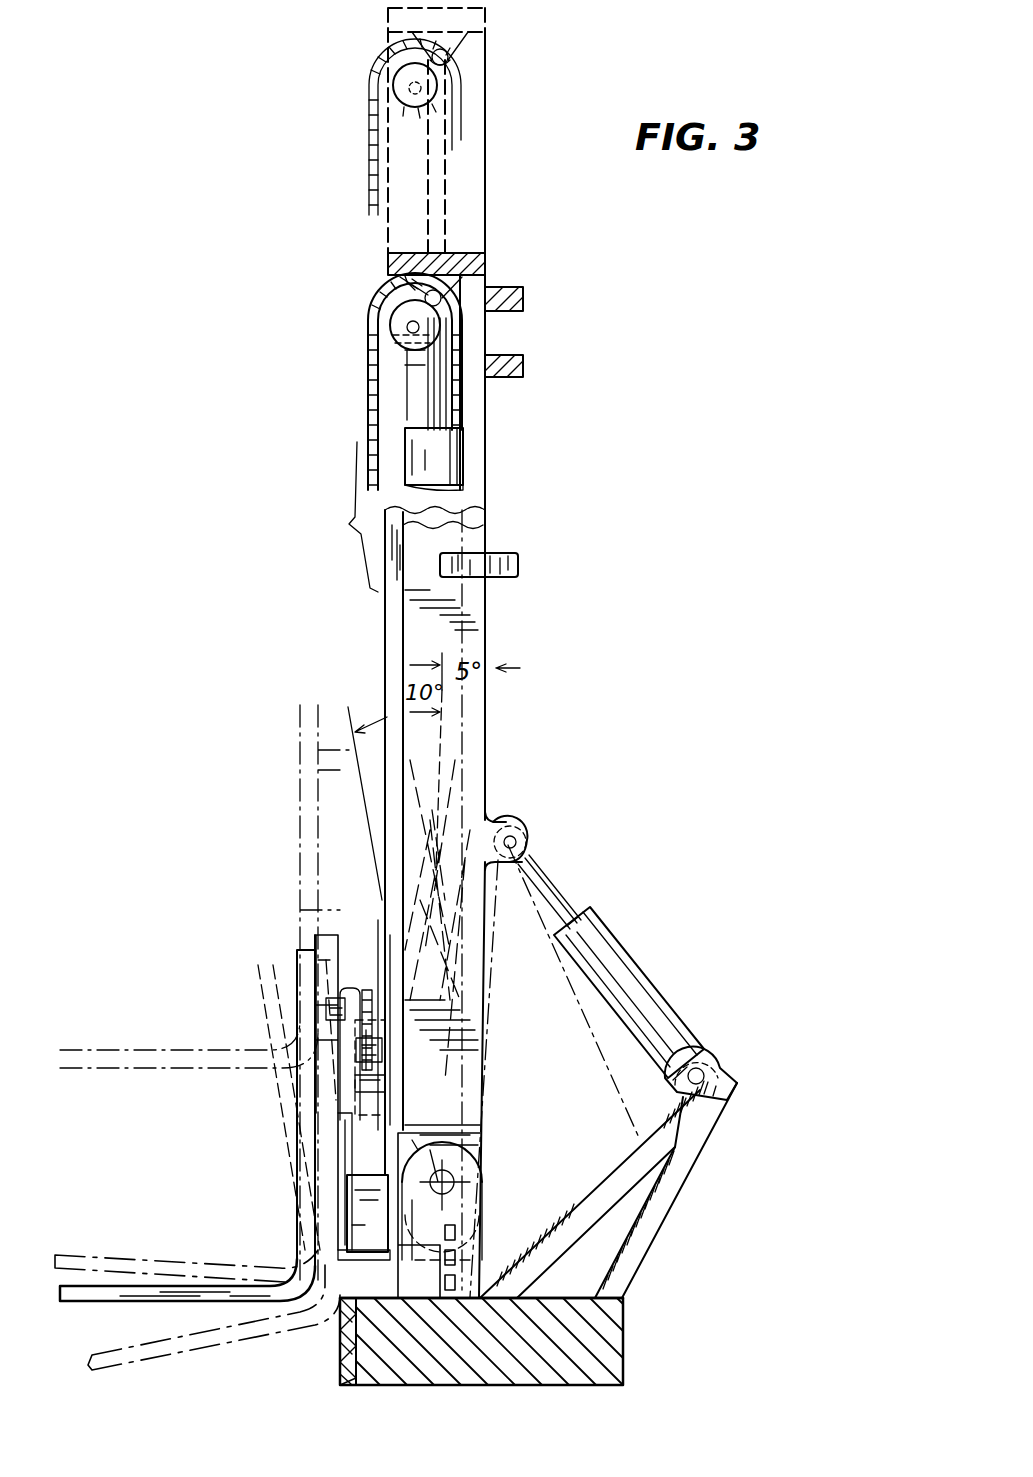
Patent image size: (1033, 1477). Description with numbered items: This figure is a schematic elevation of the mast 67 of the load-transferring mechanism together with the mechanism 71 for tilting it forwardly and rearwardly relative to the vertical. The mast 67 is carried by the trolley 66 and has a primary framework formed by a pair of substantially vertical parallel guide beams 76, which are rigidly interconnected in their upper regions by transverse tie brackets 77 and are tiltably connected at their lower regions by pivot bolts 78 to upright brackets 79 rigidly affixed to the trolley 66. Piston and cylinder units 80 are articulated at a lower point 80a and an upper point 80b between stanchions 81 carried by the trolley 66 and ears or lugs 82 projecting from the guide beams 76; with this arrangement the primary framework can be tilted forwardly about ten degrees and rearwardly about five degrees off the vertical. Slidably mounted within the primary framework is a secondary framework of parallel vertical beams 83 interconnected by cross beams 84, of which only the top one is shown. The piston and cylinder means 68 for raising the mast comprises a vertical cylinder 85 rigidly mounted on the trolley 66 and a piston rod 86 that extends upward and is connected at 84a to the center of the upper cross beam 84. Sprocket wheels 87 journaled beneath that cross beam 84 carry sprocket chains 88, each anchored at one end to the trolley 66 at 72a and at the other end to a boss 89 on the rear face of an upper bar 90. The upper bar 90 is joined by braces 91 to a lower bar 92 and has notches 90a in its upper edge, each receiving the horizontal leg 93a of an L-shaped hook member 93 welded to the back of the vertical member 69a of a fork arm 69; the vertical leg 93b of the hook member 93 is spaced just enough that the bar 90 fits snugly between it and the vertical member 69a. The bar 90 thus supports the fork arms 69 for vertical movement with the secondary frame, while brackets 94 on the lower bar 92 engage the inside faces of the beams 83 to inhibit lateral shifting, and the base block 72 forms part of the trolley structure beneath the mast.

The trolley 66 is at (638, 1322).
The mast 67 is at (363, 622).
The piston and cylinder means 68 is at (478, 462).
The fork arms 69 is at (138, 1300).
The vertical member of fork arm 69a is at (325, 1170).
The tilting mechanism 71 is at (719, 1045).
The base block 72 is at (605, 1362).
The chain anchoring point 72a is at (477, 1280).
The guide beams 76 is at (478, 600).
The transverse tie brackets 77 is at (505, 558).
The pivot bolts 78 is at (448, 1182).
The upright brackets 79 is at (408, 1280).
The piston and cylinder units 80 is at (600, 940).
The lower articulation point 80a is at (715, 1090).
The upper articulation point 80b is at (520, 843).
The stanchions 81 is at (672, 1182).
The ears or lugs 82 is at (505, 822).
The vertical beams of secondary framework 83 is at (475, 330).
The cross beams 84 is at (468, 258).
The piston rod connection 84a is at (410, 286).
The vertical cylinder 85 is at (410, 443).
The piston rod 86 is at (430, 400).
The sprocket wheels 87 is at (388, 321).
The sprocket chains 88 is at (370, 348).
The bosses 89 is at (362, 1040).
The upper bar 90 is at (338, 1090).
The notches 90a is at (326, 1005).
The braces 91 is at (478, 1138).
The lower bar 92 is at (340, 1245).
The hook member 93 is at (340, 965).
The horizontal leg of hook member 93a is at (357, 990).
The vertical leg of hook member 93b is at (480, 1104).
The brackets 94 is at (360, 1225).